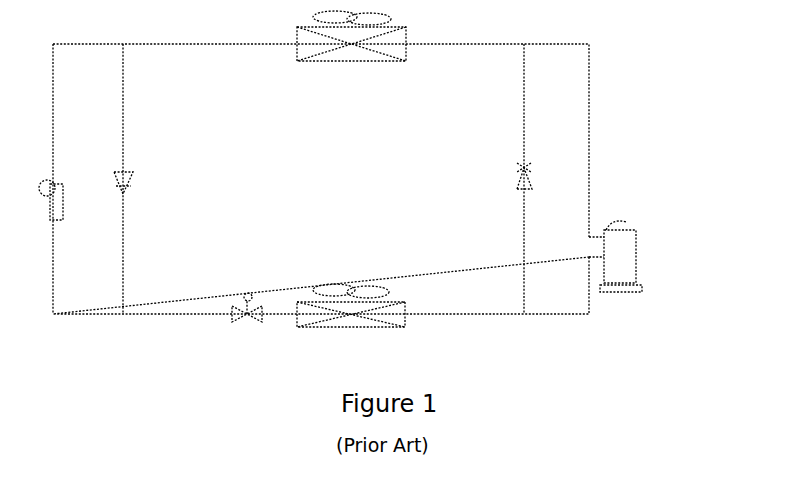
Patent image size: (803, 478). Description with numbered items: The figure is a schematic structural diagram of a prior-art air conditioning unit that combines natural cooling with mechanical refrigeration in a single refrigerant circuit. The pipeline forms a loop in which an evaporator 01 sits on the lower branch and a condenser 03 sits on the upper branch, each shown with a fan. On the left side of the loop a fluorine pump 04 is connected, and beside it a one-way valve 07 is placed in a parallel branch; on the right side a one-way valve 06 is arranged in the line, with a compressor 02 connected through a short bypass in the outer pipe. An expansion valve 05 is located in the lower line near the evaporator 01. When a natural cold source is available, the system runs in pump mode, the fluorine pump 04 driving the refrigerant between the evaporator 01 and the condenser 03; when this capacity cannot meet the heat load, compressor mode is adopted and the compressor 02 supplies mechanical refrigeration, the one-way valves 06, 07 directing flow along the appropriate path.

The evaporator 01 is at (352, 312).
The compressor 02 is at (614, 257).
The condenser 03 is at (388, 45).
The fluorine pump 04 is at (53, 197).
The expansion valve 05 is at (235, 318).
The one-way valve 06 is at (524, 178).
The one-way valve 07 is at (123, 168).